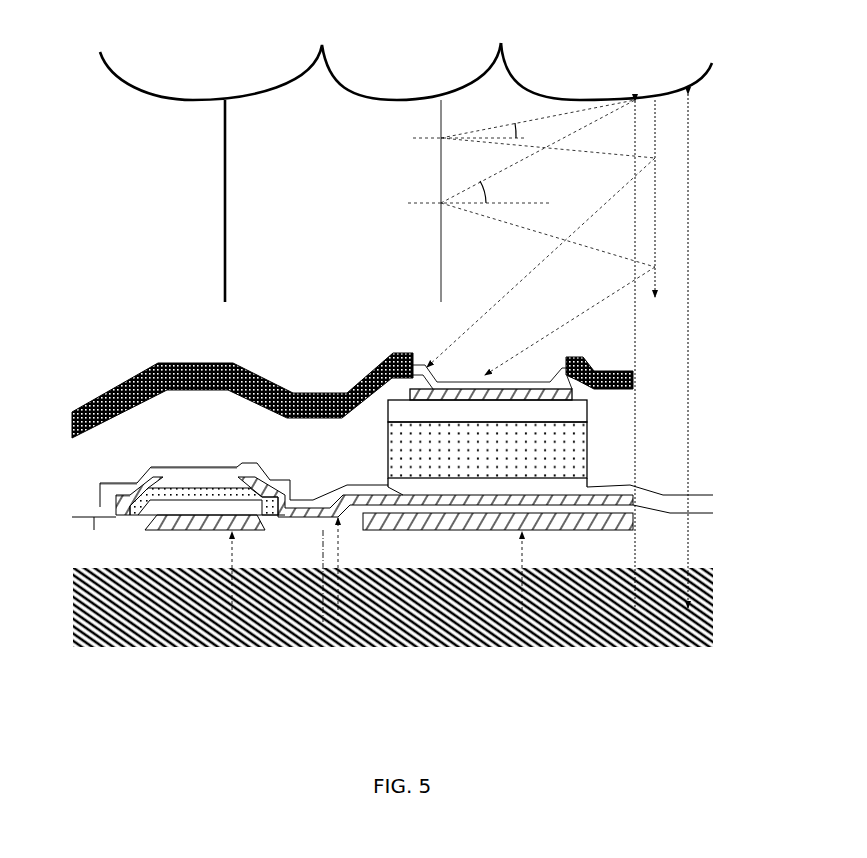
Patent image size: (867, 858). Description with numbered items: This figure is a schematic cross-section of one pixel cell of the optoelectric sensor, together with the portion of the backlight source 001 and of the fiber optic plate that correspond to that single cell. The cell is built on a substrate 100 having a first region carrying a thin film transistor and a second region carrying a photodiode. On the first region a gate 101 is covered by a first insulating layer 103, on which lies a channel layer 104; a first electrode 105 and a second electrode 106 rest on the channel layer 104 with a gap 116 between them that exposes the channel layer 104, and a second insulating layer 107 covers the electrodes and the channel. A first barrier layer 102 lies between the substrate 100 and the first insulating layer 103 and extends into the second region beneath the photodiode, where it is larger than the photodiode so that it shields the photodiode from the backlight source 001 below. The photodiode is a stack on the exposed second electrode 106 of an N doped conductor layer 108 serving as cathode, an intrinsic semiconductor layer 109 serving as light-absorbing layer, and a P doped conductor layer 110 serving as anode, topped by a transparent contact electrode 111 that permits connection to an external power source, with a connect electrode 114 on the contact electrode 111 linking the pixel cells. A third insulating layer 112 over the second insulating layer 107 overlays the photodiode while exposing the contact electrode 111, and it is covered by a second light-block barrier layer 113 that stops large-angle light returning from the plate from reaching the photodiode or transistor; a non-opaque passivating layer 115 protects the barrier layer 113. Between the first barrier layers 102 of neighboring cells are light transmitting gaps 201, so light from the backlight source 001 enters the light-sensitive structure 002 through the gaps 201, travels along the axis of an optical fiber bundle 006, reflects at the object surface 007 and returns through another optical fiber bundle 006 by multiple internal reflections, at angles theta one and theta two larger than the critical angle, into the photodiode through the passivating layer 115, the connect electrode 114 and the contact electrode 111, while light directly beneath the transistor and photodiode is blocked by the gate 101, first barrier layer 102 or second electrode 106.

The backlight source 001 is at (698, 616).
The light-sensitive structure 002 is at (700, 255).
The optical fiber bundle 006 is at (118, 138).
The object surface 007 is at (708, 82).
The substrate 100 is at (697, 552).
The gate 101 is at (193, 517).
The first barrier layer 102 is at (455, 517).
The first insulating layer 103 is at (700, 525).
The channel layer 104 is at (100, 507).
The first electrode 105 is at (118, 498).
The second electrode 106 is at (633, 502).
The second insulating layer 107 is at (127, 485).
The N doped conductor layer 108 is at (565, 487).
The intrinsic semiconductor layer 109 is at (582, 454).
The P doped conductor layer 110 is at (563, 411).
The contact electrode 111 is at (572, 389).
The third insulating layer 112 is at (110, 460).
The second light-block barrier layer 113 is at (115, 387).
The connect electrode 114 is at (487, 382).
The passivating layer 115 is at (660, 358).
The gap 116 is at (178, 482).
The gap 201 is at (655, 523).